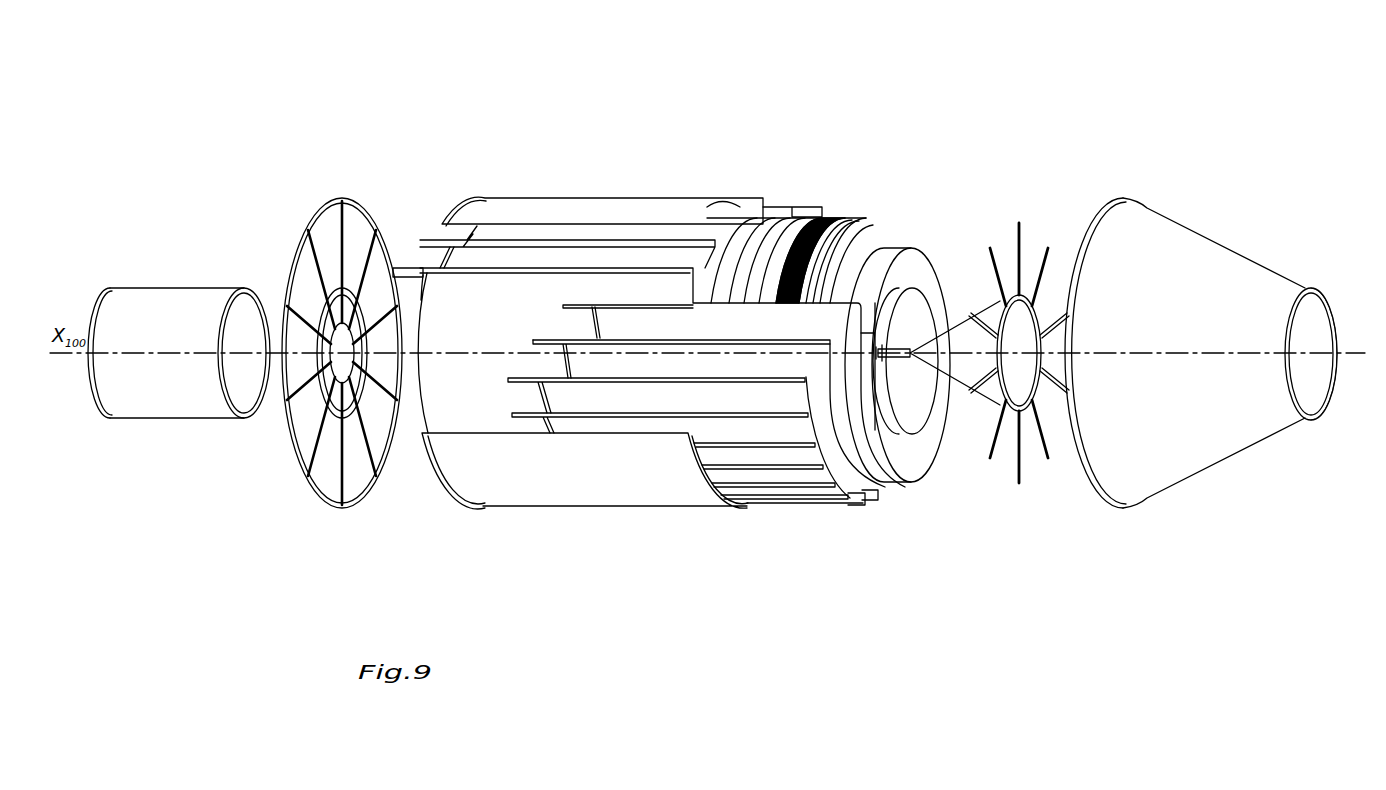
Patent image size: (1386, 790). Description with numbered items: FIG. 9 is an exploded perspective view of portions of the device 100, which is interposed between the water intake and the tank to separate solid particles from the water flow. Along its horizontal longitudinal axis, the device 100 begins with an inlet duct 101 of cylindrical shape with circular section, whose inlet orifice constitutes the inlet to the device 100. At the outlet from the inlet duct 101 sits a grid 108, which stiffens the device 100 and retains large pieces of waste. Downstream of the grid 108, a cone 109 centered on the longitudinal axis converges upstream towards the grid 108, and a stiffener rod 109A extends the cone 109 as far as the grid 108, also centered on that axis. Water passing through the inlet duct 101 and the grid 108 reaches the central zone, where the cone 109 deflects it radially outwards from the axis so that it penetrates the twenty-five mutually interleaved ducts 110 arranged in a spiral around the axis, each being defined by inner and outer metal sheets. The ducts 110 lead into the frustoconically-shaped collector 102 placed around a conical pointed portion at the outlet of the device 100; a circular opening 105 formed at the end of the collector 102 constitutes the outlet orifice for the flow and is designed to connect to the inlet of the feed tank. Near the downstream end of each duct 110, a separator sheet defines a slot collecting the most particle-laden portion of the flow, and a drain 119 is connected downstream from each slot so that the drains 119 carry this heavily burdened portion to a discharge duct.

The device 100 is at (797, 117).
The inlet duct 101 is at (163, 317).
The collector 102 is at (1208, 273).
The circular opening 105 is at (1313, 387).
The grid 108 is at (343, 453).
The cone 109 is at (968, 318).
The stiffener rod 109A is at (898, 360).
The ducts 110 is at (863, 220).
The drain 119 is at (422, 244).